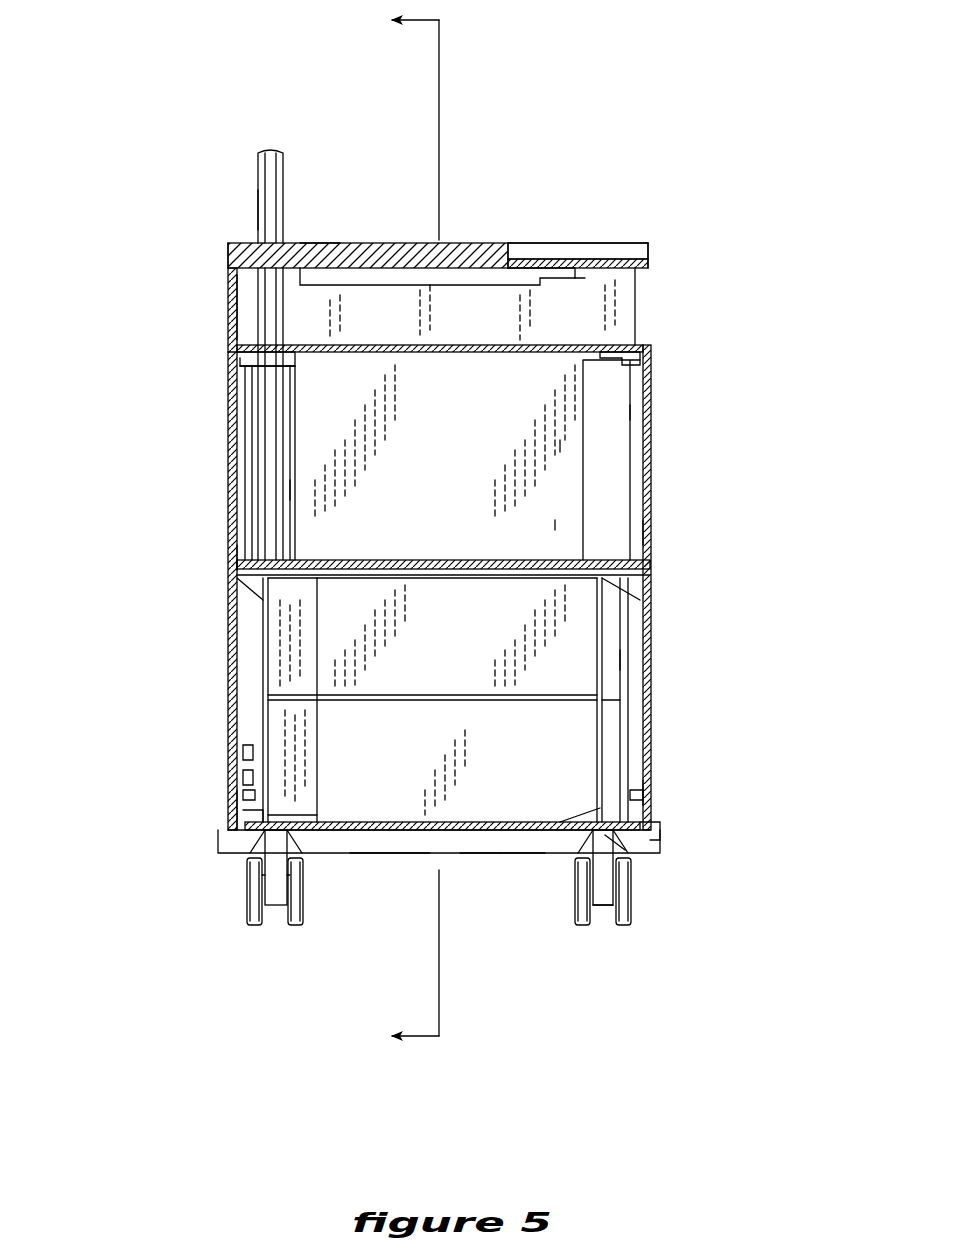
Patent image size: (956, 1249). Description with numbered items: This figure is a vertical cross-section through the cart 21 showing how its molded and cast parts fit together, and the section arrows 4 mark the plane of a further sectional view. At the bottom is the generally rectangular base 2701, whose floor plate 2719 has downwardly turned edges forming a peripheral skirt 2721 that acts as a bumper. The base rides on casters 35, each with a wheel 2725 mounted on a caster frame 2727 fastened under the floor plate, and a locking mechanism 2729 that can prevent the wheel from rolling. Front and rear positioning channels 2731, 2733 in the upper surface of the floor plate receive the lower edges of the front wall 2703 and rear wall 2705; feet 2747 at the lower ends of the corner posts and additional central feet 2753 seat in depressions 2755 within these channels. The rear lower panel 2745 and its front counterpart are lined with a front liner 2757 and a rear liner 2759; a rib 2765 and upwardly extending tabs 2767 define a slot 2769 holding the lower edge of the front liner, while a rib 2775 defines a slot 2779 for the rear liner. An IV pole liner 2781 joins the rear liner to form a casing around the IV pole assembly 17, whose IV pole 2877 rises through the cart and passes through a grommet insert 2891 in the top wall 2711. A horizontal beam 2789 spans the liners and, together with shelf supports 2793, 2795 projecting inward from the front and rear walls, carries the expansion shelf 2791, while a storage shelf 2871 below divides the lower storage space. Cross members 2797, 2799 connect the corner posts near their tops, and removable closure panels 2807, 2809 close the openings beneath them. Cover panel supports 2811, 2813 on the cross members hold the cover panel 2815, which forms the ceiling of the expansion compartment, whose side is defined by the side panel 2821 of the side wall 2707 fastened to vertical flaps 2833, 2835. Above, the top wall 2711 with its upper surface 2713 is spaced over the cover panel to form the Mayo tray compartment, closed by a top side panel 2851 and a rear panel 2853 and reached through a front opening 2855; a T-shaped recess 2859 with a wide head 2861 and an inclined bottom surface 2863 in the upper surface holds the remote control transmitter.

The section line 4- 4 is at (399, 529).
The IV pole assembly 17 is at (250, 170).
The cart 21 is at (640, 222).
The casters 35 is at (246, 905).
The base 2701 is at (222, 842).
The front wall 2703 is at (655, 485).
The rear wall 2705 is at (226, 447).
The side wall 2707 is at (560, 520).
The top wall 2711 is at (318, 240).
The upper surface 2713 is at (370, 243).
The floor plate 2719 is at (522, 855).
The peripheral skirt 2721 is at (505, 855).
The wheel 2725 is at (297, 925).
The caster frame 2727 is at (440, 830).
The locking mechanism 2729 is at (610, 925).
The front positioning channel 2731 is at (658, 832).
The rear positioning channel 2733 is at (236, 812).
The lower panel 2745 is at (630, 625).
The feet 2747 is at (263, 632).
The additional feet 2753 is at (248, 795).
The depressions 2755 is at (262, 838).
The front liner 2757 is at (634, 658).
The rear liner 2759 is at (268, 668).
The rib 2765 is at (648, 792).
The tabs 2767 is at (590, 825).
The slot 2769 is at (622, 848).
The rib 2775 is at (262, 815).
The slot 2779 is at (290, 820).
The IV pole liner 2781 is at (280, 745).
The horizontal beam 2789 is at (440, 695).
The expansion shelf 2791 is at (432, 560).
The shelf support 2793 is at (605, 580).
The shelf support 2795 is at (262, 590).
The cross member 2797 is at (640, 353).
The cross member 2799 is at (240, 356).
The closure panel 2807 is at (651, 528).
The closure panel 2809 is at (236, 530).
The cover panel support 2811 is at (620, 372).
The cover panel support 2813 is at (262, 380).
The cover panel 2815 is at (640, 345).
The side panel 2821 is at (560, 447).
The vertical flap 2833 is at (632, 413).
The vertical flap 2835 is at (292, 486).
The top side panel 2851 is at (472, 300).
The rear panel 2853 is at (236, 318).
The opening 2855 is at (638, 275).
The T-shaped recess 2859 is at (570, 243).
The head 2861 is at (650, 246).
The inclined bottom surface 2863 is at (575, 268).
The storage shelf 2871 is at (612, 700).
The IV pole 2877 is at (256, 190).
The grommet insert 2891 is at (228, 248).